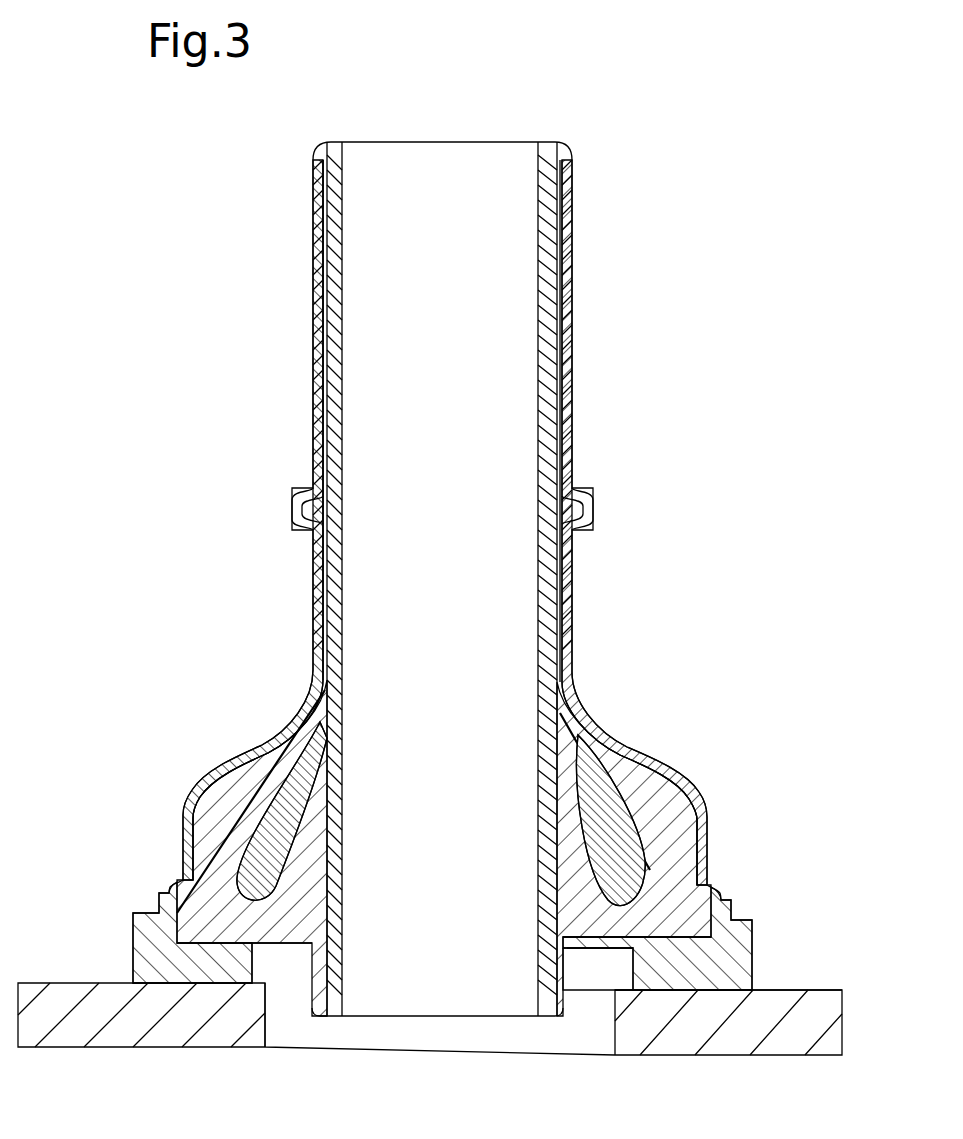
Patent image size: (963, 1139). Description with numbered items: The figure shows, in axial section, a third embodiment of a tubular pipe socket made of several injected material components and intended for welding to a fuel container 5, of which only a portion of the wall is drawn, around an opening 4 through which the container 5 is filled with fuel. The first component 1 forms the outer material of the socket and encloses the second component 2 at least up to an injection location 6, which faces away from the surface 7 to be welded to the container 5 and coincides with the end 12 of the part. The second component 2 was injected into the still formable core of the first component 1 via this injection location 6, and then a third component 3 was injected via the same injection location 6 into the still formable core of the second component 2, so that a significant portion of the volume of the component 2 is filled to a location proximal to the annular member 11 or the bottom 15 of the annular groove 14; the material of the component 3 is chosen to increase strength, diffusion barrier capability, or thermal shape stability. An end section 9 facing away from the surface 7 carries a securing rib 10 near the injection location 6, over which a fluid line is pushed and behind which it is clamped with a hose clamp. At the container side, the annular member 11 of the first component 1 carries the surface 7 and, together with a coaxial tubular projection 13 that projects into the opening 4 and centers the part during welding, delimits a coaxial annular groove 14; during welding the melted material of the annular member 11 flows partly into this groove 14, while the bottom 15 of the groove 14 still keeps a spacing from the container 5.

The first component 1 is at (465, 575).
The second component 2 is at (660, 851).
The third component 3 is at (631, 810).
The opening 4 is at (272, 1022).
The container 5 is at (96, 1048).
The injection location 6 is at (556, 148).
The surface 7 is at (683, 992).
The end section 9 is at (578, 395).
The securing rib 10 is at (592, 507).
The annular member 11 is at (712, 962).
The end 12 is at (468, 140).
The tubular projection 13 is at (321, 1018).
The annular groove 14 is at (578, 968).
The bottom 15 is at (597, 950).